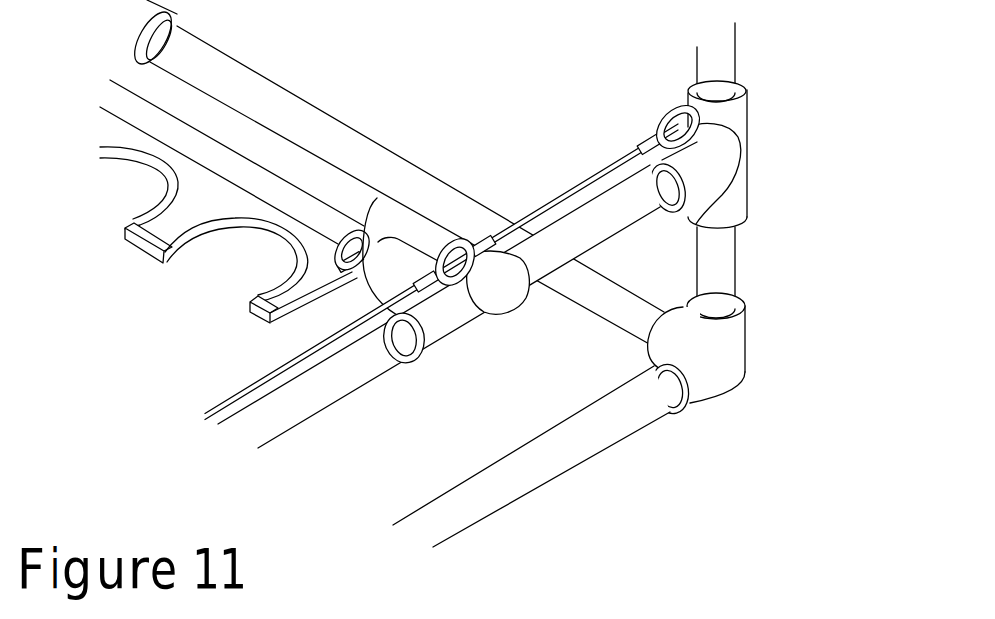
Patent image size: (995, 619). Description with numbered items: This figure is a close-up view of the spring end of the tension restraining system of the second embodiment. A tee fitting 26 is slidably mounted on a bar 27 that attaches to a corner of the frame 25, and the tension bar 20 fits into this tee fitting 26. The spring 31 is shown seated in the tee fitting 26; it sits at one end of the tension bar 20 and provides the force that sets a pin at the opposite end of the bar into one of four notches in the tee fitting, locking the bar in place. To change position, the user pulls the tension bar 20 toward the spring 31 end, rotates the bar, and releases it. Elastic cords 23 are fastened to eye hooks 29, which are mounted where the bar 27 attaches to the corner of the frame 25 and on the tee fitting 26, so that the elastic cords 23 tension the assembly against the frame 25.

The tension bar 20 is at (312, 218).
The elastic cords 23 is at (596, 183).
The frame 25 is at (570, 447).
The tee fitting 26 is at (457, 325).
The bar 27 is at (610, 215).
The eye hooks 29 is at (700, 142).
The spring 31 is at (377, 198).